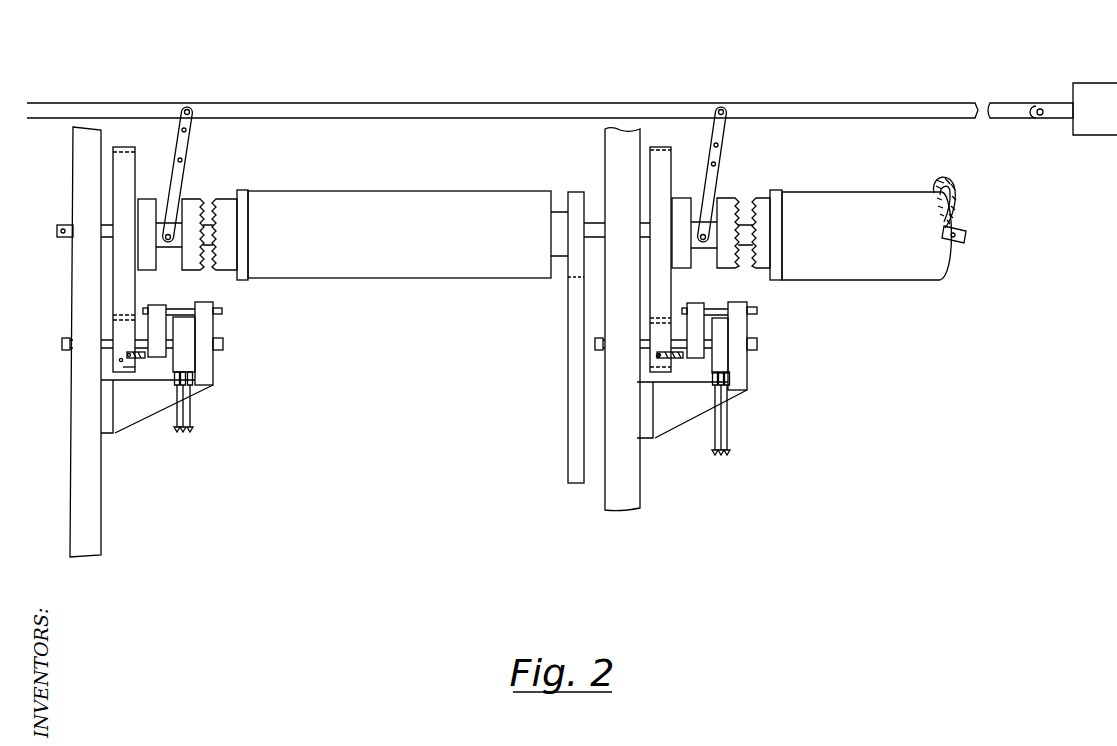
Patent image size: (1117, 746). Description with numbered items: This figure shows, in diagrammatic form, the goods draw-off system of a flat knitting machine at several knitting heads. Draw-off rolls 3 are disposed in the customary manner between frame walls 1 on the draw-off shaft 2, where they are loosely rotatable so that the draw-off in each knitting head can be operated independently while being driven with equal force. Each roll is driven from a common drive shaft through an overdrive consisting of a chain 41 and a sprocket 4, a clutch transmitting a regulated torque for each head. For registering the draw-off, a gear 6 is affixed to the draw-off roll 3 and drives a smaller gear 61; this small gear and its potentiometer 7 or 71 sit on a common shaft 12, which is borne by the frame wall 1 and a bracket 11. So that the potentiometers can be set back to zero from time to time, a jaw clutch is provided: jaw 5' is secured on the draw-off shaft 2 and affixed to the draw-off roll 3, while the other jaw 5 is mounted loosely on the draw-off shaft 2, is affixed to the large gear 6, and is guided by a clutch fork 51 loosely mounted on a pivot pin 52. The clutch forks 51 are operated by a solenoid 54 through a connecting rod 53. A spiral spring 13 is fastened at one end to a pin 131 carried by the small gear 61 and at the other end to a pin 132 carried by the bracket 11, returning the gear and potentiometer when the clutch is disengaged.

The frame wall 1 is at (85, 527).
The draw-off shaft 2 is at (62, 230).
The draw-off roll 3 is at (380, 255).
The sprocket 4 is at (522, 337).
The chain 41 is at (573, 407).
The jaw of jaw clutch 5 is at (398, 143).
The jaw of jaw clutch 5' is at (555, 152).
The clutch fork 51 is at (188, 127).
The pivot pin 52 is at (502, 142).
The connecting rod 53 is at (492, 108).
The solenoid 54 is at (1104, 117).
The gear 6 is at (342, 261).
The small gear 61 is at (121, 360).
The potentiometer 7 is at (187, 341).
The potentiometer 71 is at (721, 342).
The bracket 11 is at (137, 407).
The common shaft 12 is at (62, 345).
The spiral spring 13 is at (155, 348).
The pin 131 is at (140, 357).
The pin 132 is at (222, 311).